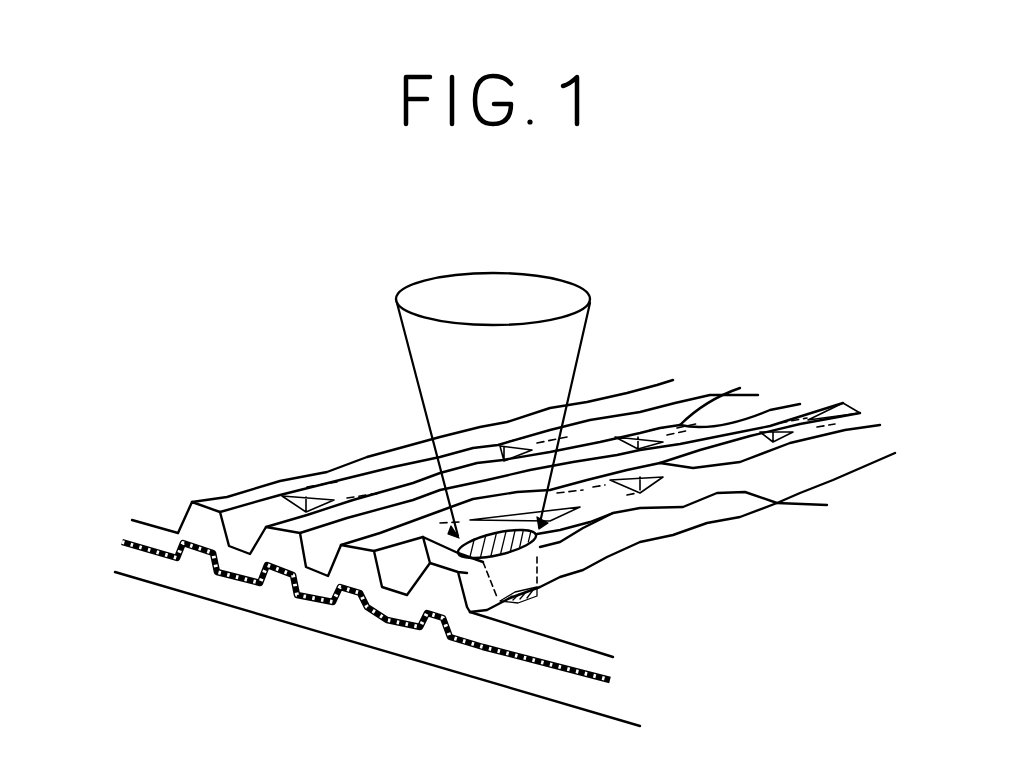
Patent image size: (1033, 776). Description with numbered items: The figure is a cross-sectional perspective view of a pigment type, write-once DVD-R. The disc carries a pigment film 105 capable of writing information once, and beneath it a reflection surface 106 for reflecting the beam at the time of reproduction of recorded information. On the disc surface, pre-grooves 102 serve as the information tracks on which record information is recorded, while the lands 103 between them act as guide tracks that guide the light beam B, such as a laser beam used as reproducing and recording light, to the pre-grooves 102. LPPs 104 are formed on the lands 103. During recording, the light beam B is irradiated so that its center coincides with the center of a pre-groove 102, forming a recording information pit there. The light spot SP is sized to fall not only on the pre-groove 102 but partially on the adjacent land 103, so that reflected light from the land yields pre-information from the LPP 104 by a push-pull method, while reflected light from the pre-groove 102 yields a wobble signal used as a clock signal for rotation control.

The pre-groove 102 is at (293, 523).
The land 103 is at (230, 525).
The LPP 104 is at (339, 468).
The pigment film 105 is at (593, 643).
The reflection surface 106 is at (535, 665).
The light spot SP is at (540, 566).
The light beam B is at (587, 332).